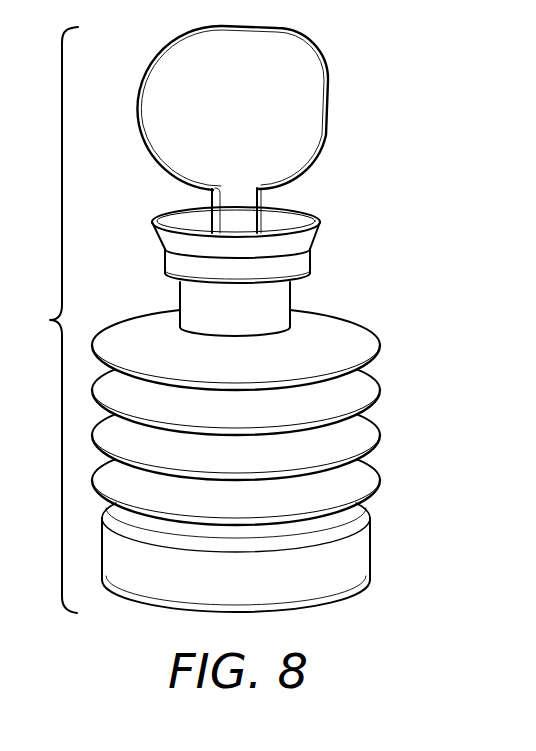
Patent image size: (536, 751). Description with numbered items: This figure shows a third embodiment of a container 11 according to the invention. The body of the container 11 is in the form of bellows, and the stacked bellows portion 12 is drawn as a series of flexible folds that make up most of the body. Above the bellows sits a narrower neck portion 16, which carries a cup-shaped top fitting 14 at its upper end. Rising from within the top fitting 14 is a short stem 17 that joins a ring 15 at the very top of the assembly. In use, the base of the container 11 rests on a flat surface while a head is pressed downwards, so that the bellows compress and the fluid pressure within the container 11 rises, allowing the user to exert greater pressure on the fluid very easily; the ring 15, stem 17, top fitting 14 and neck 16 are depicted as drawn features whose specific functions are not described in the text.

The container 11 is at (48, 320).
The insulator body with sheds 12 is at (383, 433).
The cup-shaped top fitting 14 is at (295, 216).
The ring 15 is at (315, 104).
The cylindrical neck 16 is at (283, 296).
The ring stem 17 is at (232, 218).